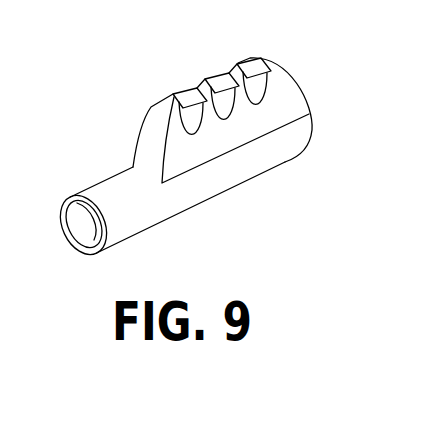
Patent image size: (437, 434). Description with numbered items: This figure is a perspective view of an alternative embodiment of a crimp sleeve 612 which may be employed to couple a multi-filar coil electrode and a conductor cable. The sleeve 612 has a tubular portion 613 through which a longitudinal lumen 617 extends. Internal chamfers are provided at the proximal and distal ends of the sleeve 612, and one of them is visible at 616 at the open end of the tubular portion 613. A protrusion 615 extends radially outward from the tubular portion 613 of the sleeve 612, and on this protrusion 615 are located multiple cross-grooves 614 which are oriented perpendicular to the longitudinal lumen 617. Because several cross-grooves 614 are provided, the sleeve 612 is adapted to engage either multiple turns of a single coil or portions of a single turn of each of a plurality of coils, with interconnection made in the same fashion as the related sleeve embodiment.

The sleeve 612 is at (106, 154).
The tubular portion 613 is at (128, 218).
The cross-grooves 614 is at (231, 75).
The protrusion 615 is at (285, 102).
The internal chamfer 616 is at (78, 238).
The longitudinal lumen 617 is at (85, 215).